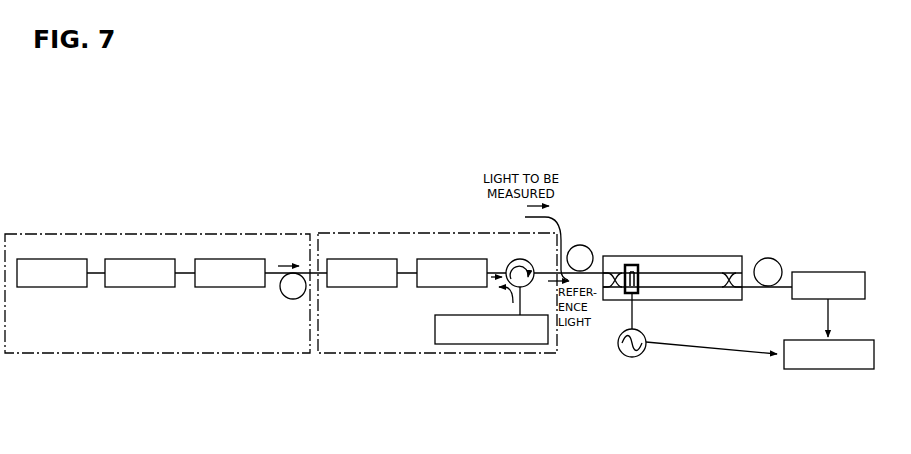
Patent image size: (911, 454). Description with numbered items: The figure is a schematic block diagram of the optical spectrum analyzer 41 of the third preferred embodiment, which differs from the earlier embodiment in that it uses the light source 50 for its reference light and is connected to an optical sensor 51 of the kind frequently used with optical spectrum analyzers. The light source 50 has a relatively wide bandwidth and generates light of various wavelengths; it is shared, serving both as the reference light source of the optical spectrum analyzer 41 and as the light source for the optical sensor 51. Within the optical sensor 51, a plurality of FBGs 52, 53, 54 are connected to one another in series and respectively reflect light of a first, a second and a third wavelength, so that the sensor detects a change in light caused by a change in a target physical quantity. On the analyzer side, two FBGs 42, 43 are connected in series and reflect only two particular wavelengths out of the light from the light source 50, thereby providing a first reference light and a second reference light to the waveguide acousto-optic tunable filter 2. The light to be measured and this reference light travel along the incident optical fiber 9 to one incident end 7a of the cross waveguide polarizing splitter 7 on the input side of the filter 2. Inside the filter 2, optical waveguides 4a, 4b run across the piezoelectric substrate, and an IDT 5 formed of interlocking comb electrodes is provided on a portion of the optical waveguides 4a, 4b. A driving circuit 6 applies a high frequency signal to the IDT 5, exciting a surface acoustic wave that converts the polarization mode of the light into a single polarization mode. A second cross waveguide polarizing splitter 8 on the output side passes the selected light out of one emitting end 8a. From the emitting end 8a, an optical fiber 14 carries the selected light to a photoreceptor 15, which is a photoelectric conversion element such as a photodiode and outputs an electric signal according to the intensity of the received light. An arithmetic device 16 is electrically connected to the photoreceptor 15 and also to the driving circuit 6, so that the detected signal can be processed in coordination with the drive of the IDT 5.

The optical spectrum analyzer 41 is at (87, 135).
The optical sensor 51 is at (256, 229).
The FBG 52 is at (53, 259).
The FBG 53 is at (127, 259).
The FBG 54 is at (217, 259).
The FBG 42 is at (360, 259).
The FBG 43 is at (436, 259).
The light source 50 is at (472, 344).
The incident optical fiber 9 is at (591, 247).
The waveguide acousto-optic tunable filter 2 is at (708, 254).
The optical waveguide 4a is at (662, 272).
The optical waveguide 4b is at (678, 288).
The IDT 5 is at (632, 265).
The driving circuit 6 is at (640, 355).
The cross waveguide polarizing splitter 7 is at (615, 297).
The incident end 7a is at (609, 297).
The cross waveguide polarizing splitter 8 is at (730, 288).
The emitting end 8a is at (742, 290).
The optical fiber 14 is at (776, 259).
The photoreceptor 15 is at (843, 272).
The arithmetic device 16 is at (812, 369).